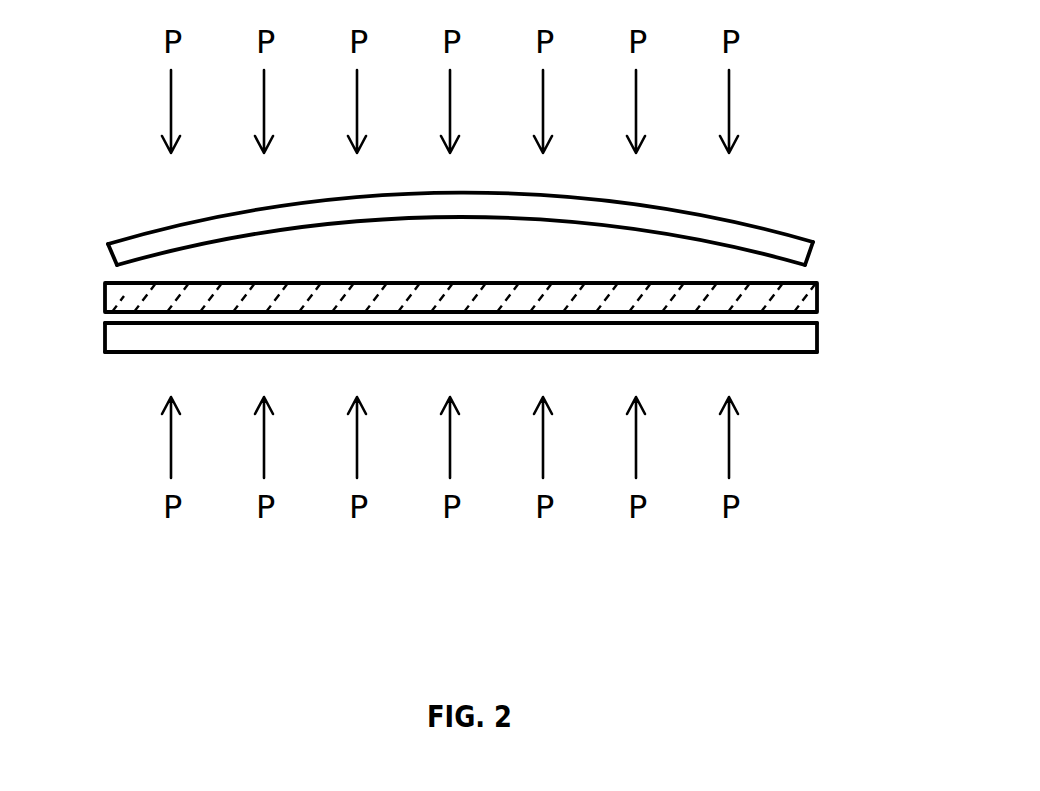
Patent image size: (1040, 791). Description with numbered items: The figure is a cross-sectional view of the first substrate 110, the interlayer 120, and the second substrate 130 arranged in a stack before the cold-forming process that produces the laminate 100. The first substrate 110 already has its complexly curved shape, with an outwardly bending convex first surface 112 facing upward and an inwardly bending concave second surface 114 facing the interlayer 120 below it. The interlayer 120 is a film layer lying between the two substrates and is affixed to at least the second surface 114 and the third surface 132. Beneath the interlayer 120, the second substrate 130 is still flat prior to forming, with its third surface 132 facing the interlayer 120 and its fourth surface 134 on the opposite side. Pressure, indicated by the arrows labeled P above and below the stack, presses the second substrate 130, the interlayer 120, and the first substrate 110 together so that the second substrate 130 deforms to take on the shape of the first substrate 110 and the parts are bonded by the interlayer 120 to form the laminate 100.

The laminate 100 is at (841, 118).
The first substrate 110 is at (145, 240).
The first surface 112 is at (159, 205).
The second surface 114 is at (102, 245).
The interlayer 120 is at (114, 303).
The second substrate 130 is at (123, 333).
The third surface 132 is at (150, 365).
The fourth surface 134 is at (755, 337).